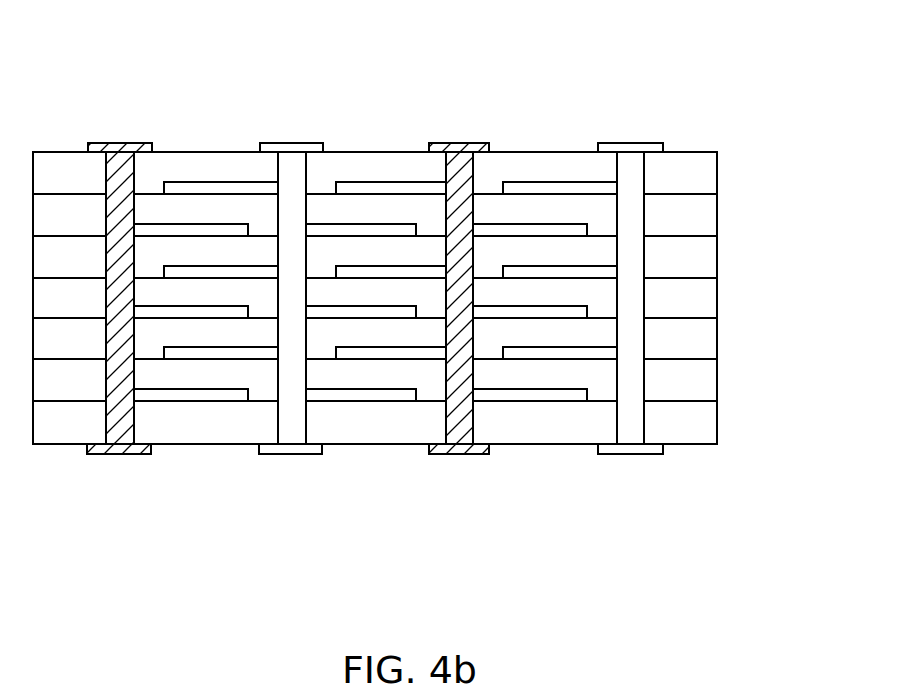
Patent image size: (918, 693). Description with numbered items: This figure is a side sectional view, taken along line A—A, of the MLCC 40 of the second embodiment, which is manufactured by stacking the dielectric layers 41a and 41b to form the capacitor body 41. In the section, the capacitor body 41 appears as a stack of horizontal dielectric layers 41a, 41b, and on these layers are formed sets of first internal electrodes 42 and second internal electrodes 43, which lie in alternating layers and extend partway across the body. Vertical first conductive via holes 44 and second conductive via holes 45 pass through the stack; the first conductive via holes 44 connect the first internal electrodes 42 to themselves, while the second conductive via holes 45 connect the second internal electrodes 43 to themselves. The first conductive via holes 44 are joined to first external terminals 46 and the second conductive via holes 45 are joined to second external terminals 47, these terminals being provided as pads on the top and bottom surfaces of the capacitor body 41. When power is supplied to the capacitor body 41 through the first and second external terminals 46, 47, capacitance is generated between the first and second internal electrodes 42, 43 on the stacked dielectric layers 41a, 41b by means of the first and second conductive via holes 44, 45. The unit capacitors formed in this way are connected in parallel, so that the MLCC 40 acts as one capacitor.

The MLCC 40 is at (719, 38).
The capacitor body 41 is at (718, 423).
The dielectric layer 41a is at (708, 213).
The dielectric layer 41b is at (708, 260).
The first internal electrode 42 is at (179, 230).
The second internal electrode 43 is at (213, 187).
The first conductive via hole 44 is at (106, 416).
The second conductive via hole 45 is at (278, 417).
The first external terminal 46 is at (110, 147).
The second external terminal 47 is at (290, 145).